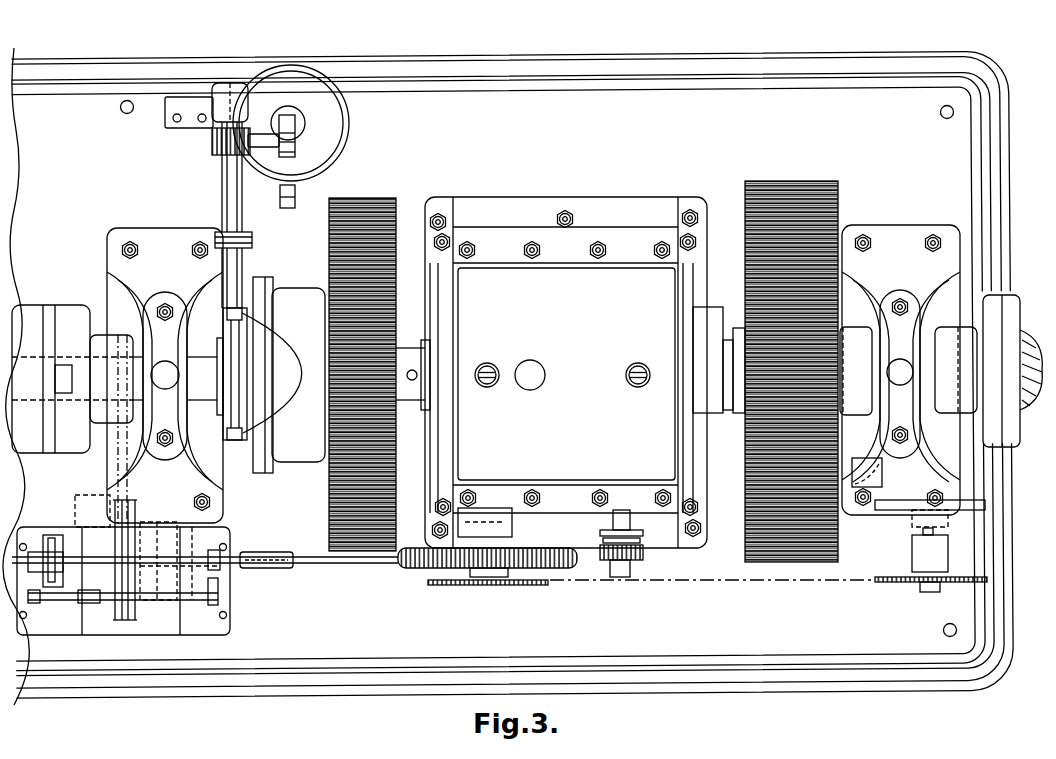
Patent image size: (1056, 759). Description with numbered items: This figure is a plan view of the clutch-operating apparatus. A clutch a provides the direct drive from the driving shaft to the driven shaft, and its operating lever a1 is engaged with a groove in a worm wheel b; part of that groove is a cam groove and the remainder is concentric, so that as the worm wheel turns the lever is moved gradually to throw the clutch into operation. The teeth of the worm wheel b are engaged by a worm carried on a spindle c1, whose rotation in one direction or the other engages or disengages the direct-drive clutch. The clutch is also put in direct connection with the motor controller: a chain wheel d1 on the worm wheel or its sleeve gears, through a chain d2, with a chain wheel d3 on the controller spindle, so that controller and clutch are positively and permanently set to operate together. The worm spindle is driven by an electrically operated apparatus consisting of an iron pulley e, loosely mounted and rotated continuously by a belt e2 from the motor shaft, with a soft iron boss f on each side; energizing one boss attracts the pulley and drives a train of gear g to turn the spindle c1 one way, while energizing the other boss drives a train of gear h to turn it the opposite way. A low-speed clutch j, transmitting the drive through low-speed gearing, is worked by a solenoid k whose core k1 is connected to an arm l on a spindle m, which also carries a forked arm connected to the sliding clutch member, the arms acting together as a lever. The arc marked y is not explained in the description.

The clutch a is at (585, 372).
The operating lever a1 is at (590, 545).
The worm wheel b is at (538, 569).
The spindle c1 is at (318, 564).
The chain wheel d1 is at (462, 586).
The chain d2 is at (682, 581).
The chain wheel d3 is at (886, 583).
The iron pulley e is at (150, 586).
The belt e2 is at (121, 447).
The soft iron boss f is at (97, 576).
The train of gear g is at (47, 537).
The train of gear h is at (212, 582).
The low-speed clutch j is at (297, 302).
The solenoid k is at (343, 138).
The core k1 is at (289, 113).
The arm l is at (278, 145).
The spindle m is at (222, 190).
The belt arc y is at (272, 373).